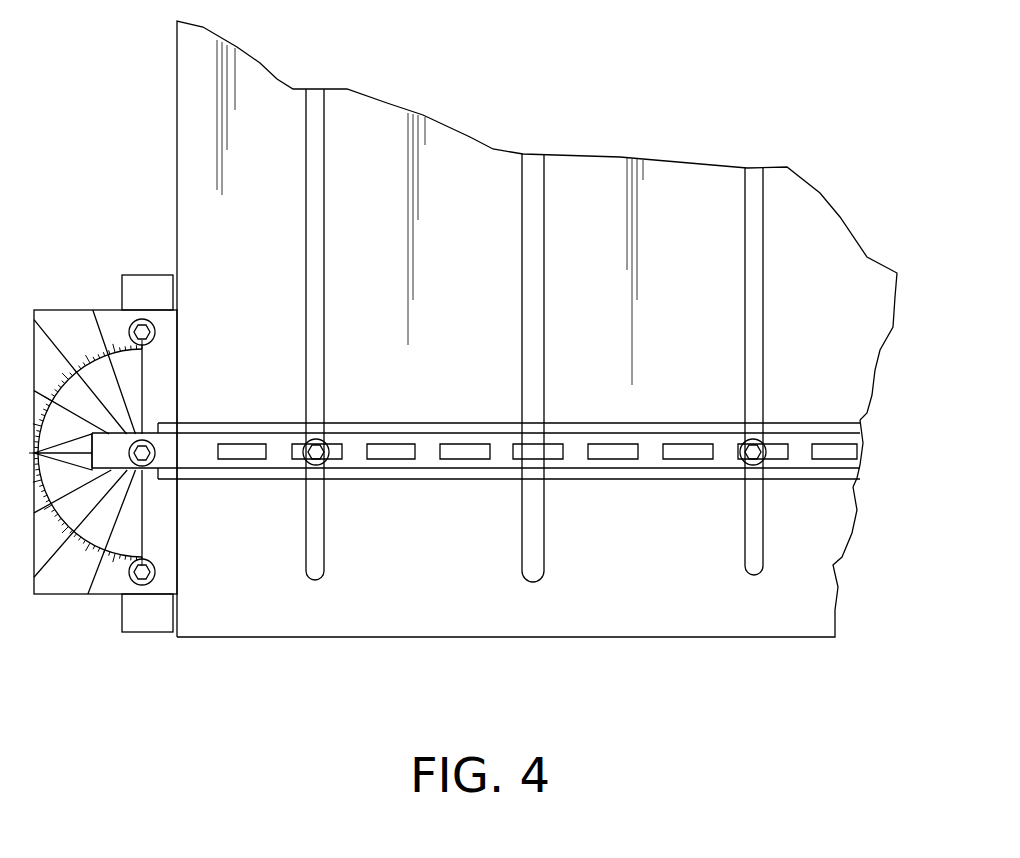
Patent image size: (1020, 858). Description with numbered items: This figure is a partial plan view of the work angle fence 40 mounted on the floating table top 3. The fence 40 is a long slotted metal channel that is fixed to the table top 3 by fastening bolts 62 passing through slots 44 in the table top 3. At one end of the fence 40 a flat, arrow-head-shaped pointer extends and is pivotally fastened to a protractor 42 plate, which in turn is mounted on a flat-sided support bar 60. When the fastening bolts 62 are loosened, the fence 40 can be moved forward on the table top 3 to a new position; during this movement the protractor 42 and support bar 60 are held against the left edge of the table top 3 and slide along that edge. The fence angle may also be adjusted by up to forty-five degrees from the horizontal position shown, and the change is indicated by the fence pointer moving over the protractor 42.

The table top 3 is at (516, 116).
The fence 40 is at (392, 470).
The protractor plate 42 is at (90, 310).
The slots 44 is at (325, 306).
The support bar 60 is at (147, 273).
The fastening bolts 62 is at (322, 442).